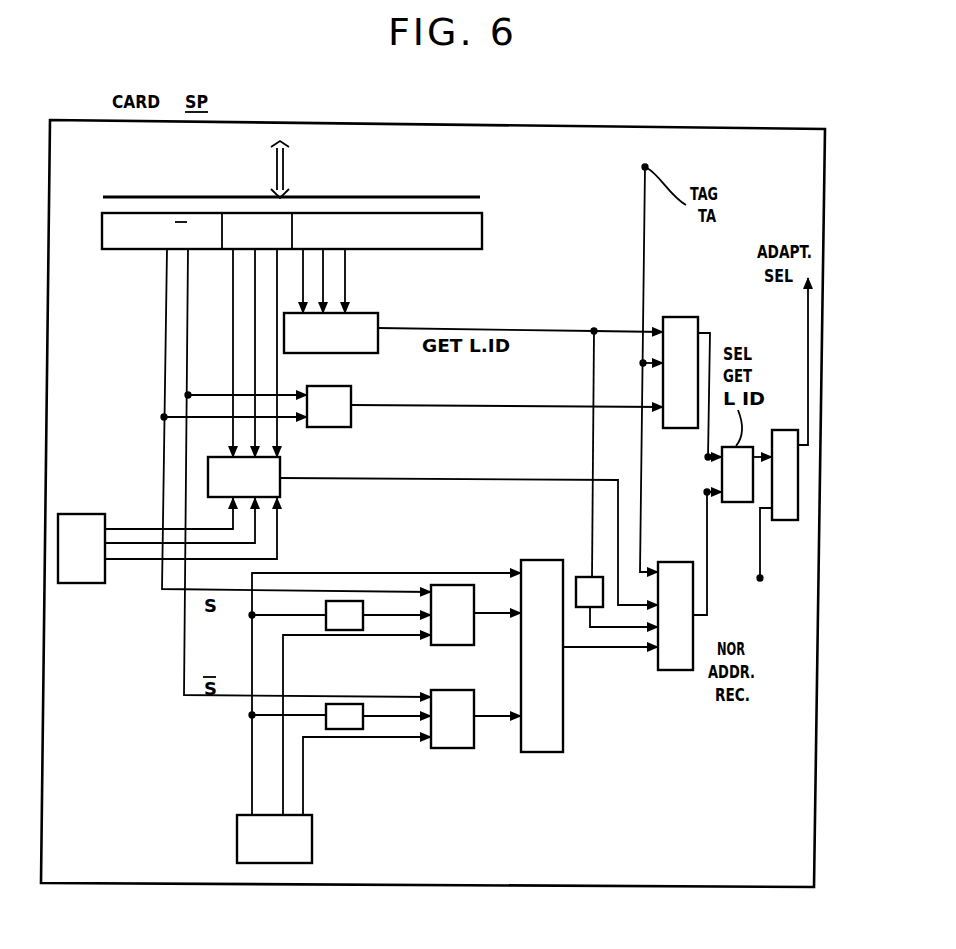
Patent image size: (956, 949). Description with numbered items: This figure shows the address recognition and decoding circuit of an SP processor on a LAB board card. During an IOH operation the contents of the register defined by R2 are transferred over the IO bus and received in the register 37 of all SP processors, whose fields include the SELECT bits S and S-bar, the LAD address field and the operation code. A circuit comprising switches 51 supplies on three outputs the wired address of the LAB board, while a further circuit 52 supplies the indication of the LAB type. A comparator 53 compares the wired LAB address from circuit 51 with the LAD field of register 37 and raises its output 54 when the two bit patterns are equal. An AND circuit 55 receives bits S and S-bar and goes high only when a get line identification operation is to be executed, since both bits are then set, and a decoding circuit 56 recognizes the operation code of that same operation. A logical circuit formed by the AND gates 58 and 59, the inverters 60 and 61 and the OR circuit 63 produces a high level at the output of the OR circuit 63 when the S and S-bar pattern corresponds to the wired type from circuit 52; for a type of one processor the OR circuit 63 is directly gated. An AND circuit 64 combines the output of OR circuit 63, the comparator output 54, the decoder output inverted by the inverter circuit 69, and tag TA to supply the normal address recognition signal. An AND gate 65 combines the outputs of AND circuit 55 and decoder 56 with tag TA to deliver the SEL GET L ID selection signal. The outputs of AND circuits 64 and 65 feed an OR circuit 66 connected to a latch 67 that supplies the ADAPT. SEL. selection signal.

The register 37 is at (100, 226).
The circuit comprising switches 51 is at (76, 513).
The circuit 52 is at (237, 827).
The comparator 53 is at (281, 467).
The output 54 is at (513, 477).
The AND circuit 55 is at (348, 428).
The decoding circuit 56 is at (380, 316).
The AND gate 58 is at (474, 605).
The AND gate 59 is at (447, 749).
The inverter 60 is at (362, 602).
The inverter 61 is at (363, 704).
The OR circuit 63 is at (563, 738).
The AND circuit 64 is at (670, 671).
The AND gate 65 is at (676, 316).
The OR circuit 66 is at (745, 503).
The latch 67 is at (782, 521).
The inverter circuit 69 is at (581, 576).